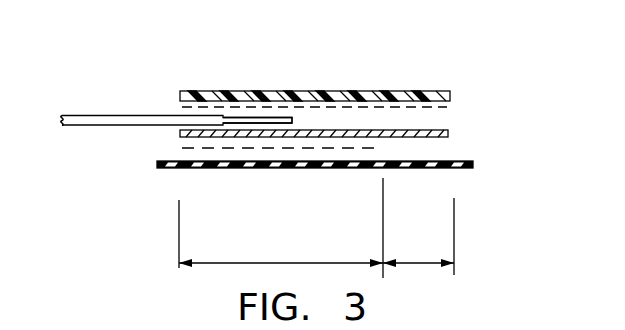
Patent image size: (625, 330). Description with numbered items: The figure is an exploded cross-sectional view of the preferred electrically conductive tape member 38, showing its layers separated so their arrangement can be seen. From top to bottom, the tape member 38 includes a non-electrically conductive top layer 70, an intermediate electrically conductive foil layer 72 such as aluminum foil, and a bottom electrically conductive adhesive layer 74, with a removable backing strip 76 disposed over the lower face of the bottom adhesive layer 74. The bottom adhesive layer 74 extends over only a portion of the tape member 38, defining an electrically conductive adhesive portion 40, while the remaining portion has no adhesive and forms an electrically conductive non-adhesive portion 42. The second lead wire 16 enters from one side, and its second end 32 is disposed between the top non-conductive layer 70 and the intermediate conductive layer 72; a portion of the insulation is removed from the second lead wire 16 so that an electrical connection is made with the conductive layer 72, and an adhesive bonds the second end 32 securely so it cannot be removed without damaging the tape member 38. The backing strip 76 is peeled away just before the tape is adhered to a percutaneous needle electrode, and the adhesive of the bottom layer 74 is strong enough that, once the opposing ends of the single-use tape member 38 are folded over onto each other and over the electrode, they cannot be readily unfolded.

The second lead wire 16 is at (87, 115).
The second end of the second lead wire 32 is at (250, 119).
The electrically conductive tape member 38 is at (514, 94).
The electrically conductive adhesive portion 40 is at (281, 234).
The electrically conductive non-adhesive portion 42 is at (418, 228).
The non-electrically conductive top layer 70 is at (355, 91).
The intermediate electrically conductive foil layer 72 is at (449, 130).
The bottom electrically conductive adhesive layer 74 is at (345, 150).
The removable backing strip 76 is at (448, 168).